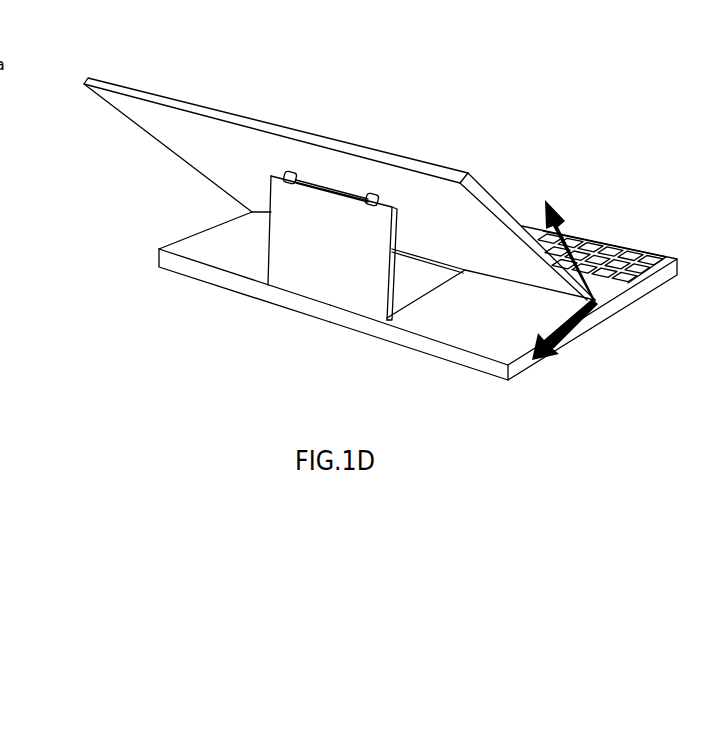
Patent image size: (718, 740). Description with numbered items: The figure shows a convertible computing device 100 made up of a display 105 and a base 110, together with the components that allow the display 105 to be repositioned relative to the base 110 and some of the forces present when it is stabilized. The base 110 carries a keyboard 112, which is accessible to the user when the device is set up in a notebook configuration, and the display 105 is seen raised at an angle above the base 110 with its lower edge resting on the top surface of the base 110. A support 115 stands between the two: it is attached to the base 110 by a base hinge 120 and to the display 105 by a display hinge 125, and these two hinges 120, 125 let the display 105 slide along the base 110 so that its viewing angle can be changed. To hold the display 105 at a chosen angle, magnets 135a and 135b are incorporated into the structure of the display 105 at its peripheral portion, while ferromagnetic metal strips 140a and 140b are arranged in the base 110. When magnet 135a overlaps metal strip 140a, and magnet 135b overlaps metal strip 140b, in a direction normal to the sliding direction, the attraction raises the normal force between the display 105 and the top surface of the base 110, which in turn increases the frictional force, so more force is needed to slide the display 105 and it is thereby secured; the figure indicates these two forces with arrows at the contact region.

The computing device 100 is at (238, 37).
The display 105 is at (407, 158).
The base 110 is at (588, 240).
The keyboard 112 is at (633, 257).
The support 115 is at (332, 257).
The base hinge 120 is at (288, 282).
The display hinge 125 is at (357, 203).
The magnet 135a is at (592, 303).
The magnet 135b is at (250, 213).
The metal strip 140a is at (516, 368).
The metal strip 140b is at (177, 243).